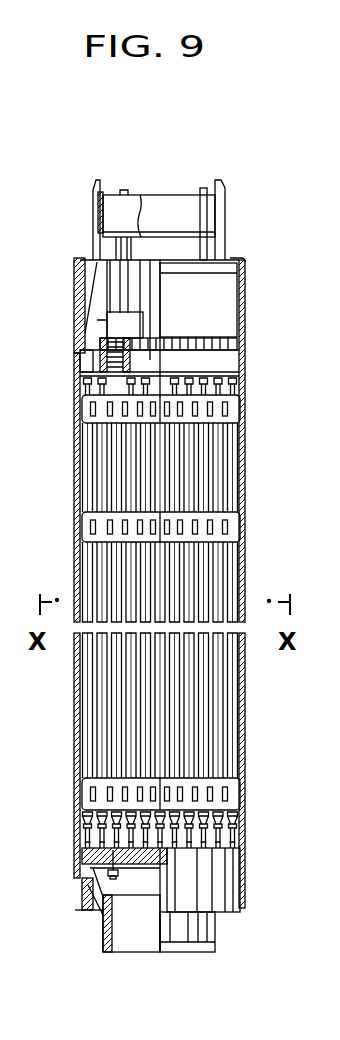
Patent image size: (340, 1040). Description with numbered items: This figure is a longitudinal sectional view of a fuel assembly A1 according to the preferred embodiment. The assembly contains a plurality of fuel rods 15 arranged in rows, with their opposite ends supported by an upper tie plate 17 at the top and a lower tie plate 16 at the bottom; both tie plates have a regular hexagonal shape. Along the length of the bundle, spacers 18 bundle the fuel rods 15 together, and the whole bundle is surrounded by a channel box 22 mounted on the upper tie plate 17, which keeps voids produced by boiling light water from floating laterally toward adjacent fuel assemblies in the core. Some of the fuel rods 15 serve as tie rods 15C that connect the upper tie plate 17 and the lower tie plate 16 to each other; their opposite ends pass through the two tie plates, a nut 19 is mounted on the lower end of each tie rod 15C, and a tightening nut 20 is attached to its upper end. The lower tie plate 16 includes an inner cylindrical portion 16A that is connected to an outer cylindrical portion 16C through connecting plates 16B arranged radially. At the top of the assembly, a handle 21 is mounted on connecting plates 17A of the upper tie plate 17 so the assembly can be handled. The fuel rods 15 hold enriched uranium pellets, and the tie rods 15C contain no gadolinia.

The fuel rods 15 is at (232, 716).
The tie rods 15C is at (118, 836).
The lower tie plate 16 is at (98, 861).
The cylindrical portion 16A is at (116, 953).
The connecting plates 16B is at (100, 912).
The outer cylindrical portion 16C is at (81, 897).
The upper tie plate 17 is at (97, 357).
The connecting plates 17A is at (96, 188).
The spacers 18 is at (82, 527).
The nut 19 is at (115, 877).
The tightening nut 20 is at (119, 327).
The handle 21 is at (178, 195).
The channel box 22 is at (245, 567).
The fuel assembly A1 is at (76, 710).